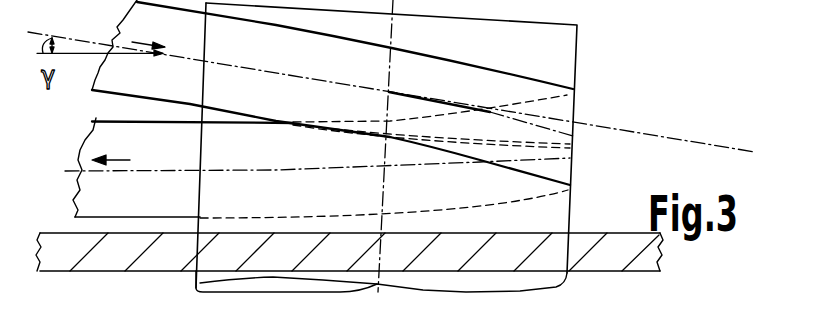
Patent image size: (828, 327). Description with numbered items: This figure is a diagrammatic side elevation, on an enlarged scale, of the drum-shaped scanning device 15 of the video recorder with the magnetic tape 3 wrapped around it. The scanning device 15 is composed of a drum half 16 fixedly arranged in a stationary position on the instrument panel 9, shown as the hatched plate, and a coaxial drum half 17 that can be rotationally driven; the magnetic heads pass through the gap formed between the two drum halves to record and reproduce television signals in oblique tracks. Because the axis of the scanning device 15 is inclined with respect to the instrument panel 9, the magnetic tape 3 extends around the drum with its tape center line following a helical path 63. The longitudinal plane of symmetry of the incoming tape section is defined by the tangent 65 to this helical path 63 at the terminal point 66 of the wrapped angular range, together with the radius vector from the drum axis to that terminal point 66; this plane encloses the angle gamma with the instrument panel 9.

The magnetic tape 3 is at (93, 135).
The instrument panel 9 is at (65, 240).
The drum-shaped scanning device 15 is at (601, 87).
The drum half 16 is at (560, 218).
The drum half 17 is at (571, 41).
The helical path 63 is at (525, 153).
The tangent 65 is at (667, 137).
The terminal point 66 is at (389, 92).